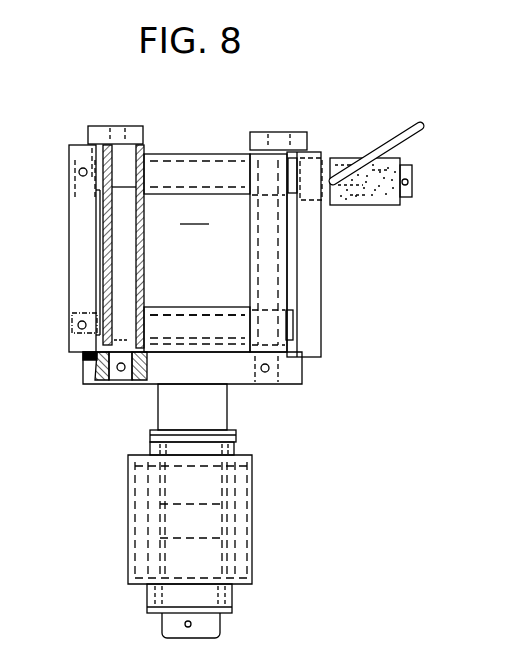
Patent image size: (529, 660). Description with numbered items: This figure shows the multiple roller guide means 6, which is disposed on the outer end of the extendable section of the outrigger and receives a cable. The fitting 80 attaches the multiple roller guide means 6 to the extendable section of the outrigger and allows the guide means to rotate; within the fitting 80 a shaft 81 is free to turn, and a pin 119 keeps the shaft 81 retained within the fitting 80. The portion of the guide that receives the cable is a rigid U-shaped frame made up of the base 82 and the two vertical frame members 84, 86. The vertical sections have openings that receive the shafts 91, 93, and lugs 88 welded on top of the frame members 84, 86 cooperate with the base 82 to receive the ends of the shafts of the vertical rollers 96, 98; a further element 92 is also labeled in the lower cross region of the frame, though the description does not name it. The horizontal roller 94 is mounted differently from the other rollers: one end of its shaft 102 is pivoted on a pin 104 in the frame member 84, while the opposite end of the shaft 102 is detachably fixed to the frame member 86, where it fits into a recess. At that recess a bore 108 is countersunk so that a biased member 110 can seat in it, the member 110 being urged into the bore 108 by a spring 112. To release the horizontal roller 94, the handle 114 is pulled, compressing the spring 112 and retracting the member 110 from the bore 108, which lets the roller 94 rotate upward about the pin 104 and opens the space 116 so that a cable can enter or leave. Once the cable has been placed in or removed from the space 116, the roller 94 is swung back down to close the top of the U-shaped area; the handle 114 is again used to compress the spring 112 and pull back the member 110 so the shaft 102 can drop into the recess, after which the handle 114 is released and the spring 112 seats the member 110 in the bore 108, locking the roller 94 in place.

The multiple roller guide means 6 is at (318, 414).
The fitting 80 is at (238, 449).
The shaft 81 is at (228, 410).
The base 82 is at (148, 384).
The frame member 84 is at (70, 225).
The frame member 86 is at (322, 290).
The lugs 88 is at (143, 128).
The shaft 91 is at (175, 310).
The lower cross beam 92 is at (229, 308).
The shaft 93 is at (156, 157).
The horizontal roller 94 is at (214, 155).
The vertical roller 96 is at (144, 300).
The vertical roller 98 is at (252, 290).
The shaft 102 is at (88, 150).
The pin 104 is at (80, 173).
The bore 108 is at (324, 156).
The biased member 110 is at (390, 205).
The spring 112 is at (413, 186).
The handle 114 is at (417, 125).
The space 116 is at (194, 214).
The pin 119 is at (185, 625).